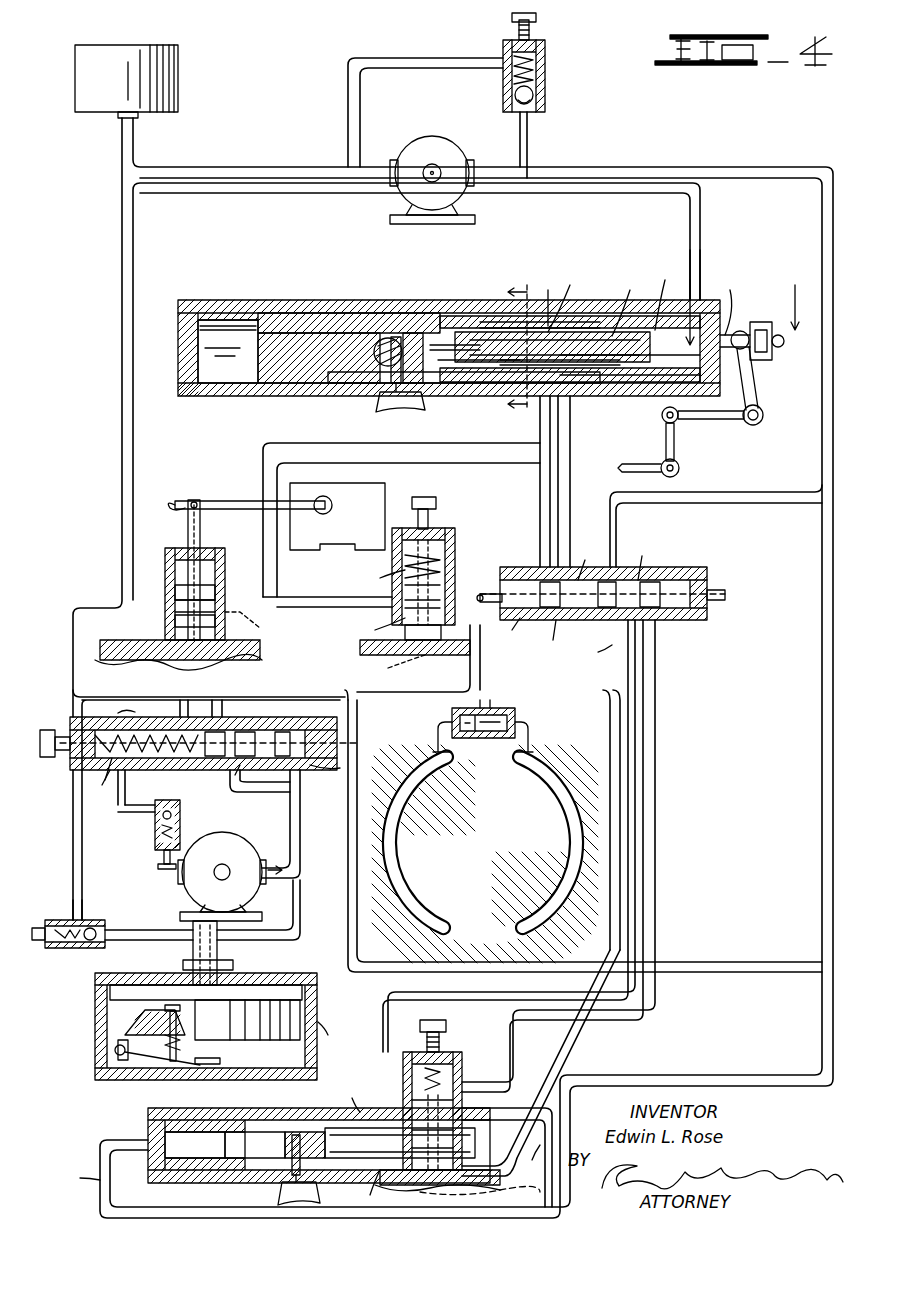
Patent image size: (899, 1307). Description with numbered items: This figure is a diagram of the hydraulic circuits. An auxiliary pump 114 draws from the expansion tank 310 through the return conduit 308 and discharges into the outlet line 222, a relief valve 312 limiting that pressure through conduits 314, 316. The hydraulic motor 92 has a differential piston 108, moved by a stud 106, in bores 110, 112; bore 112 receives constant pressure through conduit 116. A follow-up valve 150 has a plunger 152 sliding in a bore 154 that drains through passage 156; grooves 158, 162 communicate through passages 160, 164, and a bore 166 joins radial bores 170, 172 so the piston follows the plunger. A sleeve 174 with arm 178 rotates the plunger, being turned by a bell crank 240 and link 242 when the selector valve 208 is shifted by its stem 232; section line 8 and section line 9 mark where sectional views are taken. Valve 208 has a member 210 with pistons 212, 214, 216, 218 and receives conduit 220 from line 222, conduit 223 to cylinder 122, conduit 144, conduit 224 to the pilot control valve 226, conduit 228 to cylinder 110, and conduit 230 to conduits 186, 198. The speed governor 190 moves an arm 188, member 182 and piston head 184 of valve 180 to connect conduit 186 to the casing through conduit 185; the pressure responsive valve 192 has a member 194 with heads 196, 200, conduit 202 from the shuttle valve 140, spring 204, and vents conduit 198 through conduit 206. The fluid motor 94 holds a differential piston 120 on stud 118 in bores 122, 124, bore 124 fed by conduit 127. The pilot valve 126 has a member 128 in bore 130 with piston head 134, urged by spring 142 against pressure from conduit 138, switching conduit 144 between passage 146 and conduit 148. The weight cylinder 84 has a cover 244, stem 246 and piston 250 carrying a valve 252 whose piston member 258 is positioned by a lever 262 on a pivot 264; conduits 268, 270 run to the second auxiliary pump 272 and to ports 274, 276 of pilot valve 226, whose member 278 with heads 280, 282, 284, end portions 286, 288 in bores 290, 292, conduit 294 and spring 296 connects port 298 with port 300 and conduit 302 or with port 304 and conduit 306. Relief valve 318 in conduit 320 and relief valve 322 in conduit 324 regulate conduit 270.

The expansion tank 310 is at (180, 97).
The conduit 316 is at (360, 100).
The relief valve 312 is at (546, 80).
The conduit 314 is at (528, 140).
The auxiliary pump 114 is at (432, 180).
The outlet line 222 is at (612, 168).
The return conduit 308 is at (270, 185).
The conduit 116 is at (702, 212).
The hydraulic motor 92 is at (378, 300).
The cylinder bore 110 is at (222, 380).
The differential piston 108 is at (320, 372).
The bore 166 is at (298, 322).
The stud 106 is at (395, 385).
The passage 156 is at (438, 410).
The bore 154 is at (418, 340).
The passage 160 is at (475, 352).
The follow-up valve 150 is at (582, 428).
The groove 162 is at (495, 380).
The radial bore 172 is at (538, 382).
The passage 164 is at (648, 382).
The radial bore 170 is at (549, 284).
The groove 158 is at (565, 296).
The cylinder bore 112 is at (616, 302).
The plunger 152 is at (654, 291).
The sleeve 174 is at (728, 299).
The arm 178 is at (760, 322).
The section line 8- 8 is at (505, 345).
The section line 9- 9 is at (740, 300).
The link 242 is at (762, 385).
The bell crank 240 is at (683, 445).
The conduit 228 is at (598, 447).
The conduit 230 is at (540, 490).
The speed governor operated valve 180 is at (165, 580).
The movable member 182 is at (205, 550).
The piston head 184 is at (180, 595).
The conduit 186 is at (215, 598).
The conduit 185 is at (253, 627).
The arm 188 is at (222, 500).
The speed governor 190 is at (337, 516).
The pressure responsive valve 192 is at (484, 514).
The adjustable spring 204 is at (440, 545).
The movable member 194 is at (430, 585).
The piston head 196 is at (367, 577).
The conduit 198 is at (400, 606).
The piston head 200 is at (365, 630).
The conduit 206 is at (388, 664).
The conduit 202 is at (470, 660).
The stem 232 is at (482, 610).
The selector valve 208 is at (722, 552).
The piston 218 is at (732, 578).
The piston 214 is at (586, 558).
The piston 216 is at (641, 557).
The movable member 210 is at (508, 631).
The piston 212 is at (554, 638).
The conduit 220 is at (612, 530).
The conduit 223 is at (620, 660).
The conduit 224 is at (608, 640).
The conduit 144 is at (657, 660).
The conduit 306 is at (138, 694).
The conduit 302 is at (345, 860).
The shuttle valve 140 is at (520, 712).
The pilot control valve 226 is at (372, 706).
The bore 292 is at (65, 758).
The movable member 278 is at (115, 708).
The port 298 is at (195, 706).
The port 304 is at (223, 700).
The cylindrical end portion 286 is at (290, 718).
The bore 290 is at (340, 725).
The conduit 294 is at (222, 744).
The port 274 is at (340, 769).
The adjustable spring 296 is at (99, 778).
The piston head 280 is at (190, 770).
The piston 282 is at (244, 776).
The cylindrical end portion 288 is at (104, 794).
The port 276 is at (130, 828).
The port 300 is at (248, 795).
The conduit 320 is at (175, 808).
The relief valve 318 is at (172, 845).
The piston head 284 is at (286, 820).
The second auxiliary pump 272 is at (230, 876).
The conduit 324 is at (80, 880).
The relief valve 322 is at (90, 915).
The conduit 270 is at (175, 940).
The stem 246 is at (218, 935).
The conduit 268 is at (265, 950).
The cover 244 is at (90, 970).
The piston 250 is at (238, 1002).
The piston member 258 is at (172, 1008).
The valve 252 is at (180, 1045).
The lever 262 is at (222, 1060).
The pivot 264 is at (120, 1055).
The cylinder 84 is at (330, 1034).
The fluid motor 94 is at (320, 1110).
The bore 124 is at (195, 1149).
The differential piston 120 is at (350, 1143).
The stud 118 is at (285, 1185).
The bore 122 is at (351, 1188).
The adjustable spring 142 is at (352, 1098).
The conduit 127 is at (72, 1179).
The pilot valve 126 is at (485, 1034).
The bore 130 is at (450, 1062).
The movable valve member 128 is at (453, 1078).
The piston head 134 is at (453, 1125).
The passage 146 is at (475, 1150).
The conduit 138 is at (580, 1025).
The conduit 148 is at (528, 1157).